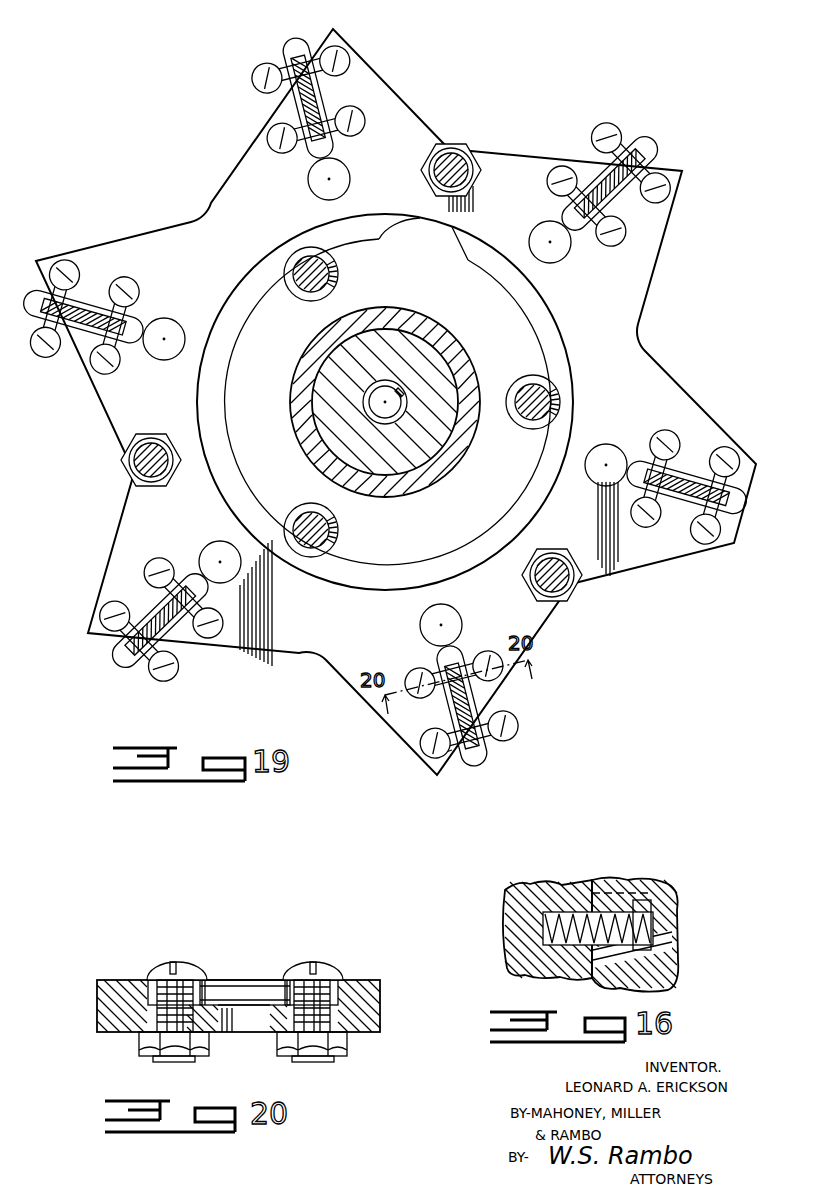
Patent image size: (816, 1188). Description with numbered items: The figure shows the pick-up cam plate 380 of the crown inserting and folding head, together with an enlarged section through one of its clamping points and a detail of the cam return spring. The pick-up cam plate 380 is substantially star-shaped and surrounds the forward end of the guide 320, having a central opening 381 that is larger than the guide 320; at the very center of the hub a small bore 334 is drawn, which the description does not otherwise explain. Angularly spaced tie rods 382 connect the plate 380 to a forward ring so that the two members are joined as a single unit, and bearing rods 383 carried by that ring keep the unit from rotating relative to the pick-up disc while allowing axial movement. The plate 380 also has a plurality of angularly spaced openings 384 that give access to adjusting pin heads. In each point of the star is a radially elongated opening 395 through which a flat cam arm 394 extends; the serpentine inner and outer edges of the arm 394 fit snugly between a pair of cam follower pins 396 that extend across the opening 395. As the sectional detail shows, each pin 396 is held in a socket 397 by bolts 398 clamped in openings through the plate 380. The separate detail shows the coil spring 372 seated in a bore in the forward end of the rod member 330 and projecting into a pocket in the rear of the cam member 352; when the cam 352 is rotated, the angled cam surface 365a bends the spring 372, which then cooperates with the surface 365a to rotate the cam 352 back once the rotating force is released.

In FIG. 19, the guide 320 is at (432, 328).
In FIG. 19, the rod member 330 is at (398, 330).
In FIG. 16, the rod member 330 is at (533, 890).
In FIG. 19, the bore 334 is at (405, 392).
In FIG. 16, the cam member 352 is at (672, 945).
In FIG. 16, the cam surface 365a is at (645, 958).
In FIG. 16, the coil spring 372 is at (583, 905).
In FIG. 19, the pick-up cam plate 380 is at (612, 573).
In FIG. 20, the pick-up cam plate 380 is at (380, 1000).
In FIG. 19, the central opening 381 is at (524, 322).
In FIG. 19, the tie rods 382 is at (452, 144).
In FIG. 19, the bearing rods 383 is at (339, 272).
In FIG. 19, the openings 384 is at (342, 170).
In FIG. 19, the cam arm 394 is at (600, 178).
In FIG. 19, the radially elongated opening 395 is at (318, 95).
In FIG. 19, the cam follower pins 396 is at (130, 320).
In FIG. 20, the cam follower pins 396 is at (220, 980).
In FIG. 19, the sockets 397 is at (432, 768).
In FIG. 20, the sockets 397 is at (340, 975).
In FIG. 19, the bolts 398 is at (726, 447).
In FIG. 20, the bolts 398 is at (152, 962).